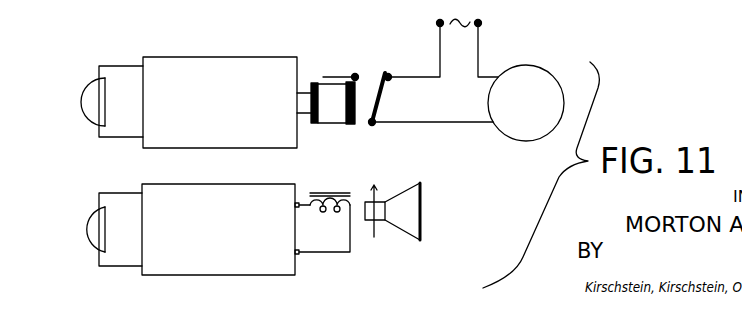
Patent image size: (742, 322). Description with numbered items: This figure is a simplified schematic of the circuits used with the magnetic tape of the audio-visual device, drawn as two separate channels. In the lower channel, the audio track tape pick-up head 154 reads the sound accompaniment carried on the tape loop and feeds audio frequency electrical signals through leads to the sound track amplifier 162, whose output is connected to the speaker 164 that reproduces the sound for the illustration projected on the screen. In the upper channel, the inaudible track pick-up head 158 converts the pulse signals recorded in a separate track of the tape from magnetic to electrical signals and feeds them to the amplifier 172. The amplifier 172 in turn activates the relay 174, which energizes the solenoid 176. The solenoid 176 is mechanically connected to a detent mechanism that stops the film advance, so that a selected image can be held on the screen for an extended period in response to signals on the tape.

The audio track tape pick-up head 154 is at (83, 227).
The inaudible track pick-up head 158 is at (82, 98).
The sound track amplifier 162 is at (217, 267).
The speaker 164 is at (398, 220).
The amplifier 172 is at (223, 70).
The relay 174 is at (335, 122).
The solenoid 176 is at (535, 78).